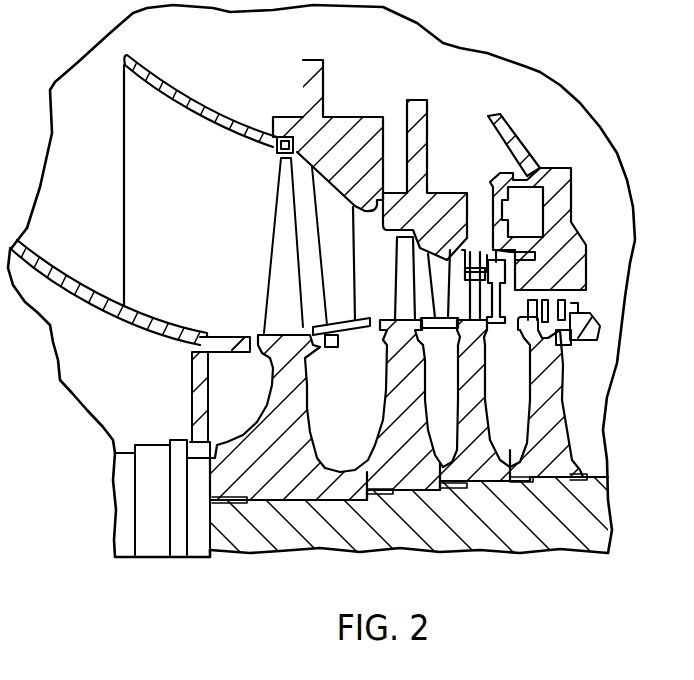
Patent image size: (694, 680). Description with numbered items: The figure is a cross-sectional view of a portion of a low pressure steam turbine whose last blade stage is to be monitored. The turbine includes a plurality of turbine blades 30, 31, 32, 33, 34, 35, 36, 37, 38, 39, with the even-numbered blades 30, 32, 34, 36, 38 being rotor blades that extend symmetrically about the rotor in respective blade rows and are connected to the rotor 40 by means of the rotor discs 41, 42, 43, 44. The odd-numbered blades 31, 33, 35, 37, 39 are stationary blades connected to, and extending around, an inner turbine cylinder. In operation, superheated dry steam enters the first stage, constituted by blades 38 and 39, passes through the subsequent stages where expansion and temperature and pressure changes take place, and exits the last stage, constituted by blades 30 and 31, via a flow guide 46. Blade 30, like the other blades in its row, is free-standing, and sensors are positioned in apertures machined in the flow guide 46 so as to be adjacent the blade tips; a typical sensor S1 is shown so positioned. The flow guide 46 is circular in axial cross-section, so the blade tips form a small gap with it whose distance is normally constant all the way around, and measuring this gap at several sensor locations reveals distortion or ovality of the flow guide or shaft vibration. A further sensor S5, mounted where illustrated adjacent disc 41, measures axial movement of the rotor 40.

The turbine blade 30 is at (279, 190).
The turbine blade 31 is at (346, 238).
The turbine blade 32 is at (398, 294).
The turbine blade 33 is at (437, 330).
The turbine blade 34 is at (481, 252).
The turbine blade 35 is at (497, 325).
The turbine blade 36 is at (523, 321).
The turbine blade 37 is at (545, 304).
The turbine blade 38 is at (560, 338).
The turbine blade 39 is at (580, 311).
The rotor 40 is at (434, 537).
The rotor disc 41 is at (270, 398).
The rotor disc 42 is at (398, 402).
The rotor disc 43 is at (467, 400).
The rotor disc 44 is at (543, 410).
The flow guide 46 is at (206, 118).
The sensor S1 is at (286, 136).
The sensor S5 is at (333, 348).